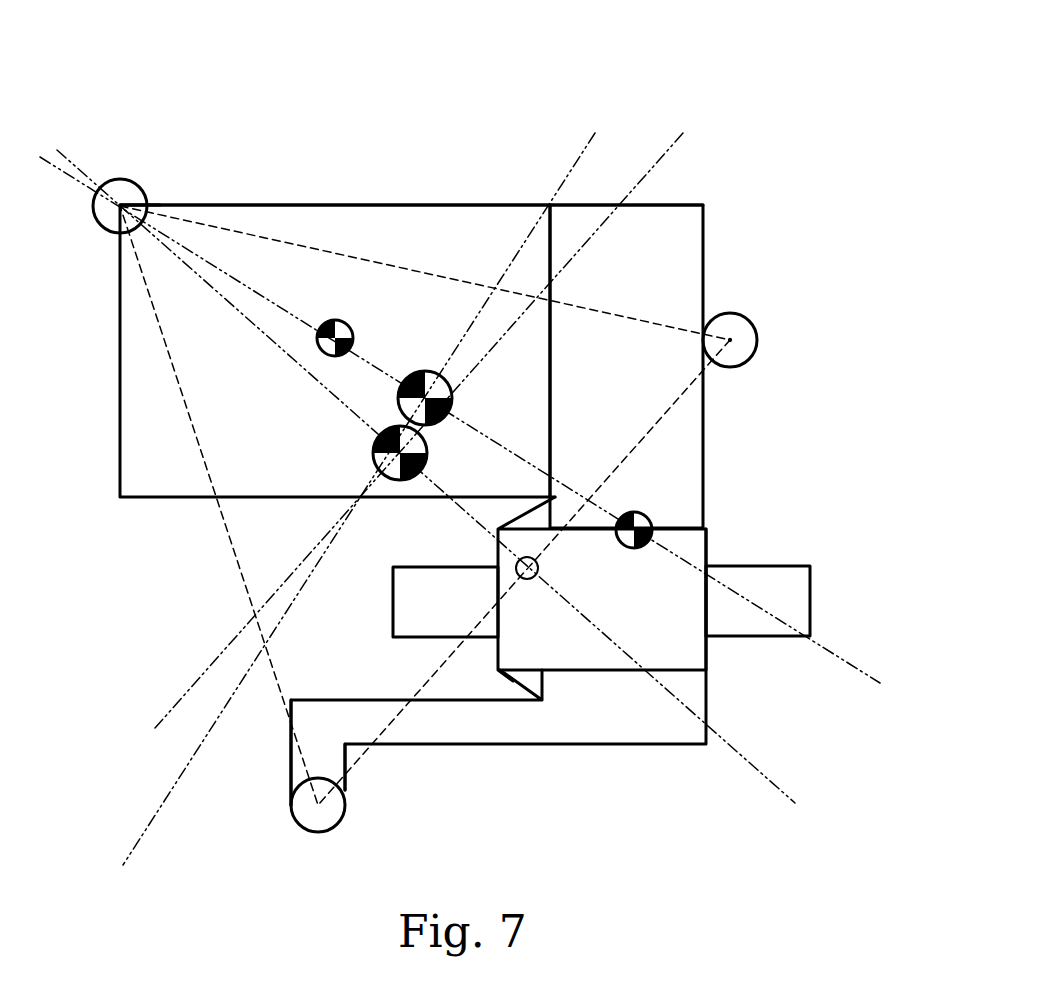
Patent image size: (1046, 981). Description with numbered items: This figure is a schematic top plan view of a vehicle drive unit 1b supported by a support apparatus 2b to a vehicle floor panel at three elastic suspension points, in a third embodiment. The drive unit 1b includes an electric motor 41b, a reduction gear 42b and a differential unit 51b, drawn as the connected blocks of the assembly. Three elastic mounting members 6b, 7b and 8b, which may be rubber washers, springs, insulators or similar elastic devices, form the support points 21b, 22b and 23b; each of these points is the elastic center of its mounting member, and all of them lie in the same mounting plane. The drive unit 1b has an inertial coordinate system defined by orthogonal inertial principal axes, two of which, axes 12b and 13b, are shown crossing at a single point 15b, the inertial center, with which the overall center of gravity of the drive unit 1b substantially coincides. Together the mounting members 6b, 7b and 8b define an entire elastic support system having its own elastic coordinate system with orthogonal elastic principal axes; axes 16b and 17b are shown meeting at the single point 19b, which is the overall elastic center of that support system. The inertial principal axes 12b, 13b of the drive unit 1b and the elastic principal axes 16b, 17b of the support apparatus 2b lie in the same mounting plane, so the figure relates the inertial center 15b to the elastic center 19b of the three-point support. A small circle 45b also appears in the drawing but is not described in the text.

The vehicle drive unit 1b is at (352, 205).
The support apparatus 2b is at (732, 397).
The elastic mounting member 6b is at (127, 178).
The elastic mounting member 7b is at (745, 315).
The elastic mounting member 8b is at (310, 831).
The inertial principal axis 12b is at (50, 164).
The inertial principal axis 13b is at (584, 160).
The inertial center 15b is at (453, 398).
The elastic principal axis 16b is at (80, 168).
The elastic principal axis 17b is at (657, 158).
The elastic center 19b is at (373, 447).
The support point 21b is at (130, 184).
The support point 22b is at (730, 340).
The support point 23b is at (336, 812).
The electric motor 41b is at (233, 203).
The reduction gear 42b is at (593, 203).
The pivot pin 45b is at (538, 561).
The differential unit 51b is at (708, 651).